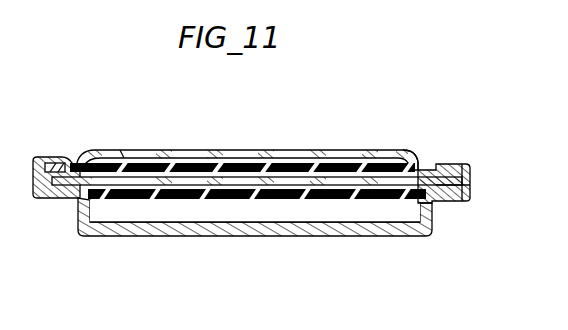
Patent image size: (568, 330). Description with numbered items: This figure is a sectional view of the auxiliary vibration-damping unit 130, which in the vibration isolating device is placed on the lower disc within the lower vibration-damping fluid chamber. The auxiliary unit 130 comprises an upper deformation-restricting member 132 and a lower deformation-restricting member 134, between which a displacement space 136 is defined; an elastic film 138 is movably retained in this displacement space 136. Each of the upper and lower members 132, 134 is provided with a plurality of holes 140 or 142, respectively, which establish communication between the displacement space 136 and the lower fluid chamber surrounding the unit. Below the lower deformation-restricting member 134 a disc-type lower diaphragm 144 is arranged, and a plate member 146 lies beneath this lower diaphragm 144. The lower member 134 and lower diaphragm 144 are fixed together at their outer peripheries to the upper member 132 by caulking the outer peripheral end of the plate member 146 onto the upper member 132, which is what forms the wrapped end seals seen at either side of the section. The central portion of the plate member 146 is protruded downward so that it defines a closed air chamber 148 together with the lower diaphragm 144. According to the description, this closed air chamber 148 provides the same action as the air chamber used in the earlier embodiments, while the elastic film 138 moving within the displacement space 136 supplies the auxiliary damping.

The auxiliary vibration-damping unit 130 is at (470, 168).
The upper deformation-restricting member 132 is at (375, 150).
The lower deformation-restricting member 134 is at (416, 162).
The displacement space 136 is at (83, 160).
The elastic film 138 is at (134, 166).
The holes 140 is at (187, 150).
The holes 142 is at (298, 180).
The lower diaphragm 144 is at (367, 203).
The plate member 146 is at (168, 236).
The closed air chamber 148 is at (255, 214).